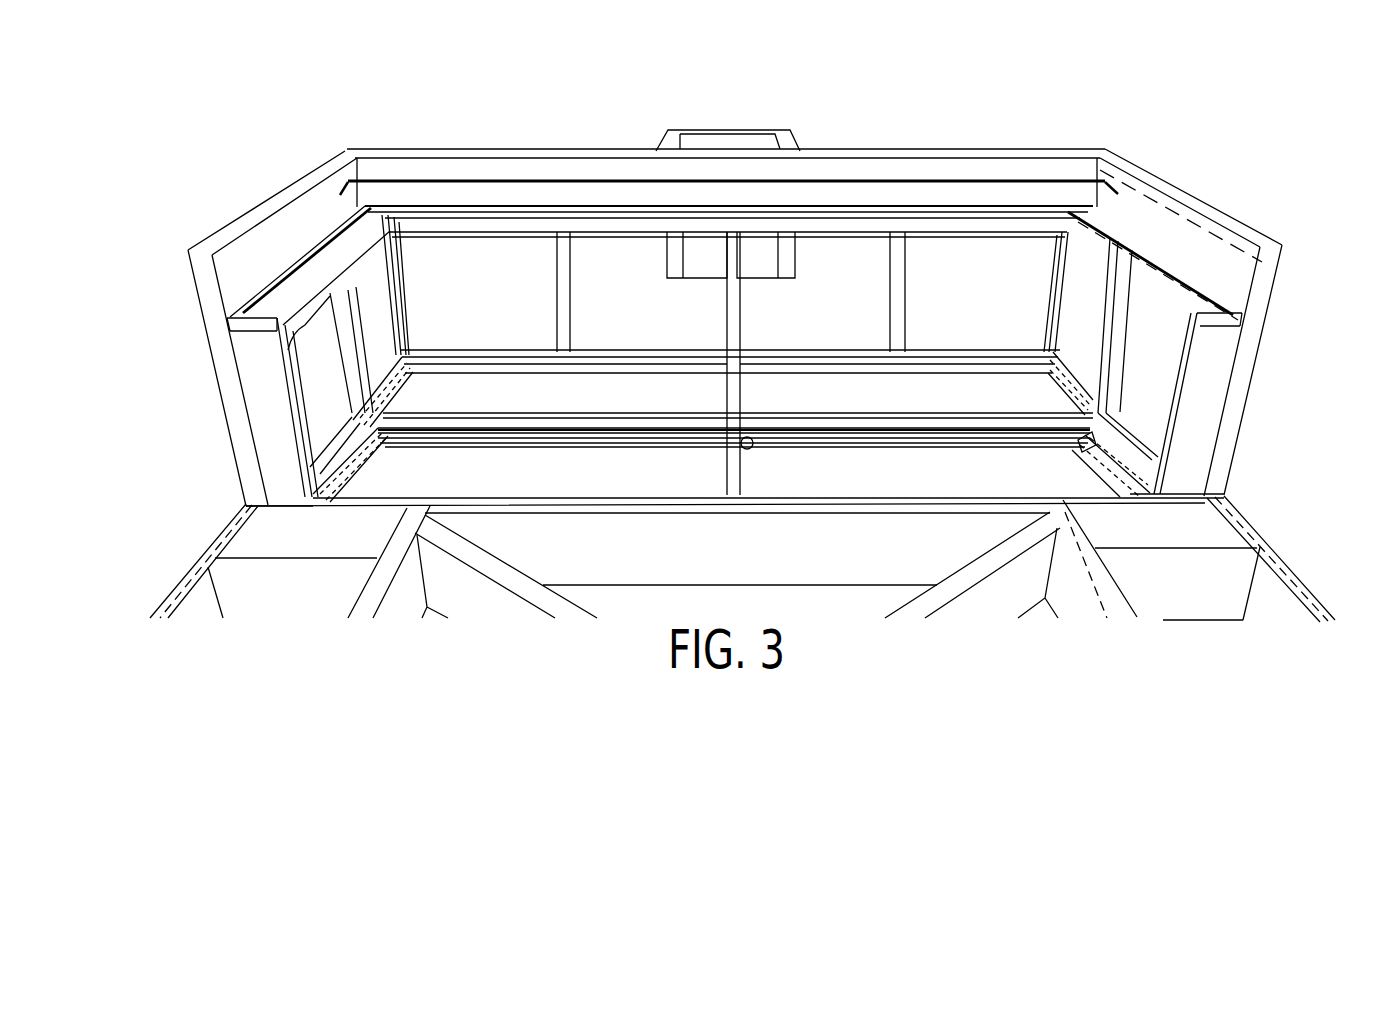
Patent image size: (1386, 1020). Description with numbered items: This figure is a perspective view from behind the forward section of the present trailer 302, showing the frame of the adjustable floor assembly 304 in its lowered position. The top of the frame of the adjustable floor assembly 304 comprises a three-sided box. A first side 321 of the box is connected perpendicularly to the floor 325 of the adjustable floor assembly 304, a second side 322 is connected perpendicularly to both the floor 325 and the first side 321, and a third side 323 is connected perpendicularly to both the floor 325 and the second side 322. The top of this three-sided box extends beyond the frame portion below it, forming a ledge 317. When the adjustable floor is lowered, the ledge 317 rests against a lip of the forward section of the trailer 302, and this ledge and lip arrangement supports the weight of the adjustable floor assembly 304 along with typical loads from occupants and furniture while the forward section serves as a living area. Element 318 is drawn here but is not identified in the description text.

The trailer 302 is at (1198, 418).
The adjustable floor assembly 304 is at (820, 181).
The ledge 317 is at (1207, 318).
The left side wall 318 is at (287, 440).
The first side 321 is at (323, 267).
The second side 322 is at (490, 221).
The third side 323 is at (1133, 250).
The floor 325 is at (688, 418).